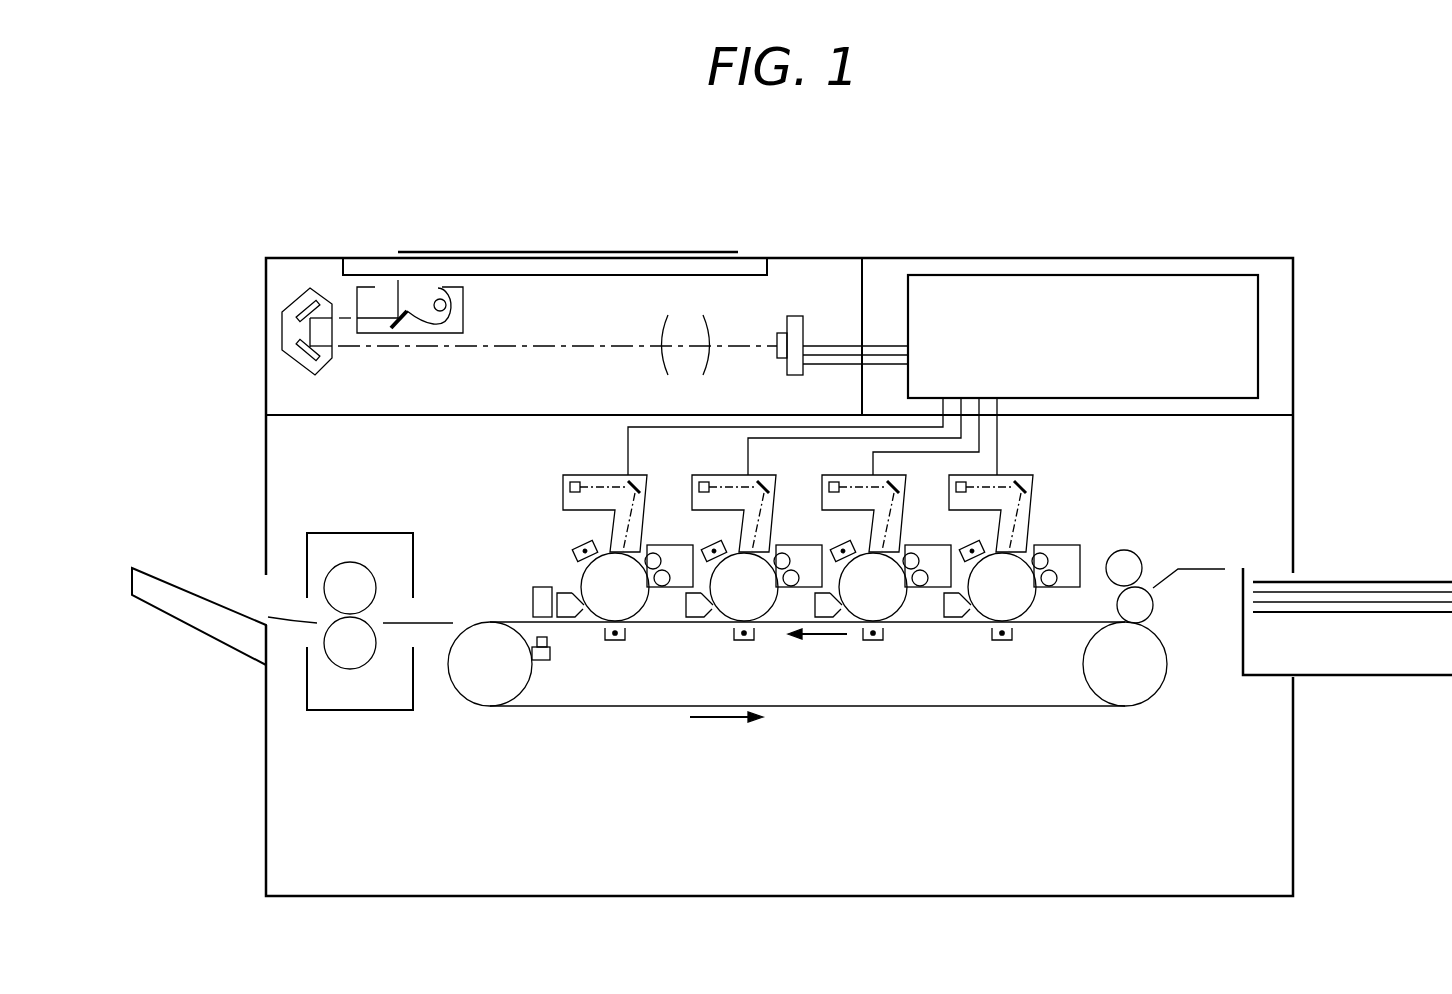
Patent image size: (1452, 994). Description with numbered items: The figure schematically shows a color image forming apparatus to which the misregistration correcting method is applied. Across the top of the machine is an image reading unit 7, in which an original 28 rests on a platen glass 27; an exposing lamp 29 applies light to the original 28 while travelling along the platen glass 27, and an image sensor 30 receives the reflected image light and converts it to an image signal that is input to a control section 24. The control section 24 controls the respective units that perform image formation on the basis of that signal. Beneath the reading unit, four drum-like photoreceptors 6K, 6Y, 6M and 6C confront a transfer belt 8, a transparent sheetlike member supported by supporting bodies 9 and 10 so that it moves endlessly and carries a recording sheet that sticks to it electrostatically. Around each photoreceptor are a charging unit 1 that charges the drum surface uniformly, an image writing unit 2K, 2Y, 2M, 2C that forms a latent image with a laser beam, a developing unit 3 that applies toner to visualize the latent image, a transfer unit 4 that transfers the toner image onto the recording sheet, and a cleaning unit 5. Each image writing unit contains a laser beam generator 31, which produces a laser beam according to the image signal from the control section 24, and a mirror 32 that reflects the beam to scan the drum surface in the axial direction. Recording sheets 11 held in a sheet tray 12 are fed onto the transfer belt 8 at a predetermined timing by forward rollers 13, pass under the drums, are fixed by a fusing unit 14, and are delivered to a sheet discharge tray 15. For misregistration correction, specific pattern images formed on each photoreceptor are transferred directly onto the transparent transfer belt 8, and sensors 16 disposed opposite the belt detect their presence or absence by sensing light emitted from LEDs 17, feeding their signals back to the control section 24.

The image reading unit 7 is at (861, 212).
The original 28 is at (541, 252).
The platen glass 27 is at (752, 257).
The exposing lamp 29 is at (463, 310).
The image sensor 30 is at (796, 316).
The control section 24 is at (1170, 275).
The image writing unit 2C is at (563, 487).
The image writing unit 2M is at (720, 475).
The image writing unit 2Y is at (850, 475).
The image writing unit 2K is at (1011, 487).
The laser beam generator 31 is at (953, 487).
The mirror 32 is at (1027, 488).
The charging unit 1 is at (576, 545).
The developing unit 3 is at (678, 545).
The transfer unit 4 is at (619, 643).
The cleaning unit 5 is at (697, 620).
The photoreceptor 6C is at (653, 621).
The photoreceptor 6M is at (782, 621).
The photoreceptor 6Y is at (911, 621).
The photoreceptor 6K is at (1040, 621).
The transfer belt 8 is at (902, 707).
The supporting body 9 is at (1078, 684).
The supporting body 10 is at (525, 688).
The LED 17 is at (549, 661).
The sensor 16 is at (541, 587).
The forward rollers 13 is at (1133, 553).
The recording sheets 11 is at (1370, 582).
The sheet tray 12 is at (1363, 677).
The fusing unit 14 is at (358, 562).
The sheet discharge tray 15 is at (181, 591).